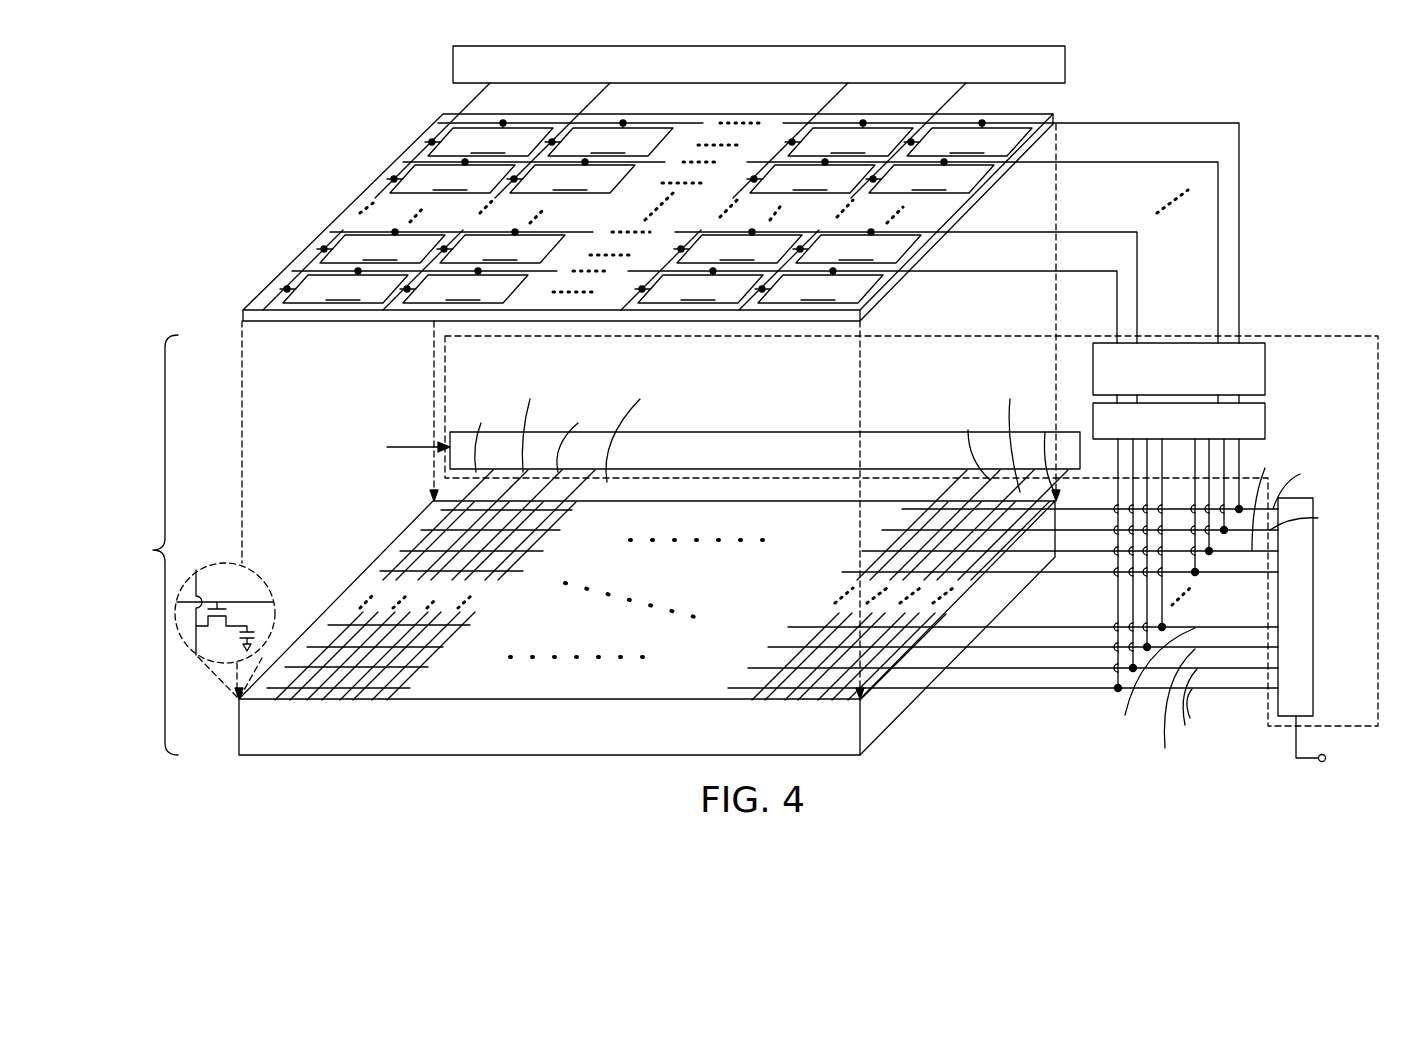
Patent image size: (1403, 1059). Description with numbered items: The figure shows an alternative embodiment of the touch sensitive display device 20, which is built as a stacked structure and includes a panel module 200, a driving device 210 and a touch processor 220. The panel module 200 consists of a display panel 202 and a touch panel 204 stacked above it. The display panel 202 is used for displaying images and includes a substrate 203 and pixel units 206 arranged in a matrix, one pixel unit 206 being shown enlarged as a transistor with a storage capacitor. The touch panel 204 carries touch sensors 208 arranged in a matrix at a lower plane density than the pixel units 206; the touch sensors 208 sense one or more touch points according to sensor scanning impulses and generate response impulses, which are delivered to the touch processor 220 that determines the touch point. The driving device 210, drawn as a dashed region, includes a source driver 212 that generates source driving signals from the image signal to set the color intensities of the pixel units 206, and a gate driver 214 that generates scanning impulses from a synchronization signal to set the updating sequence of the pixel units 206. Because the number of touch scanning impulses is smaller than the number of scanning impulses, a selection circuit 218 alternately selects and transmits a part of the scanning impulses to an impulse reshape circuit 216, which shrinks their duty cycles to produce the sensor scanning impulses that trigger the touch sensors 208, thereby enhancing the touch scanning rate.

The touch sensitive display device 20 is at (1213, 54).
The panel module 200 is at (141, 545).
The display panel 202 is at (906, 704).
The substrate 203 is at (587, 742).
The touch panel 204 is at (443, 114).
The pixel unit 206 is at (213, 563).
The touch sensor 208 is at (656, 211).
The driving device 210 is at (1318, 336).
The source driver 212 is at (745, 432).
The gate driver 214 is at (1317, 598).
The impulse reshape circuit 216 is at (1265, 359).
The selection circuit 218 is at (1265, 412).
The touch processor 220 is at (757, 45).